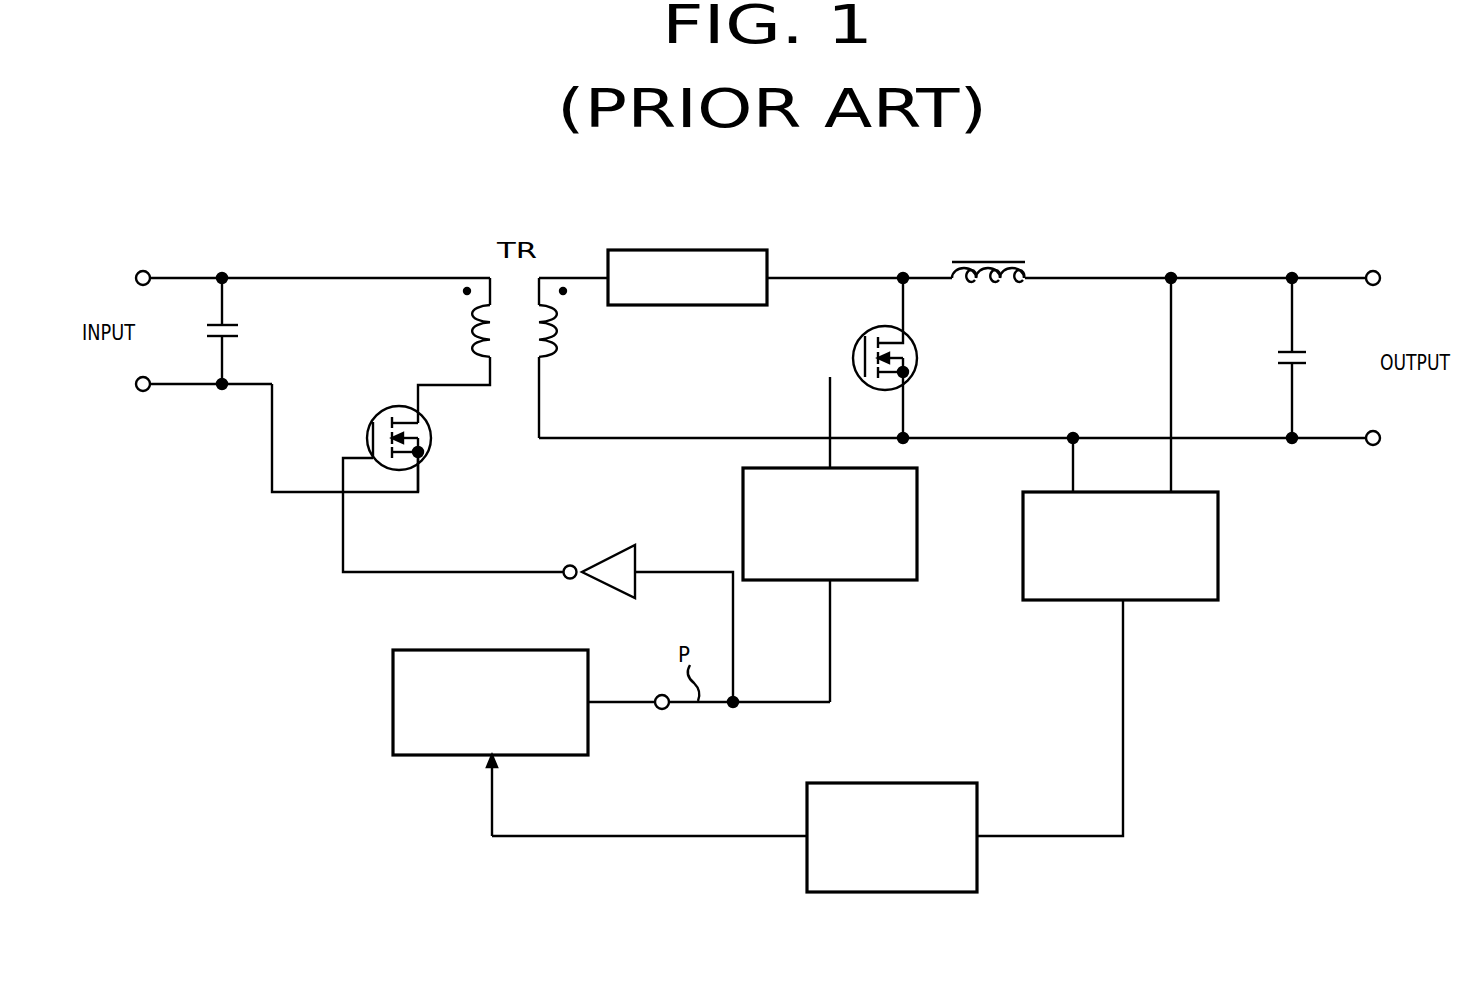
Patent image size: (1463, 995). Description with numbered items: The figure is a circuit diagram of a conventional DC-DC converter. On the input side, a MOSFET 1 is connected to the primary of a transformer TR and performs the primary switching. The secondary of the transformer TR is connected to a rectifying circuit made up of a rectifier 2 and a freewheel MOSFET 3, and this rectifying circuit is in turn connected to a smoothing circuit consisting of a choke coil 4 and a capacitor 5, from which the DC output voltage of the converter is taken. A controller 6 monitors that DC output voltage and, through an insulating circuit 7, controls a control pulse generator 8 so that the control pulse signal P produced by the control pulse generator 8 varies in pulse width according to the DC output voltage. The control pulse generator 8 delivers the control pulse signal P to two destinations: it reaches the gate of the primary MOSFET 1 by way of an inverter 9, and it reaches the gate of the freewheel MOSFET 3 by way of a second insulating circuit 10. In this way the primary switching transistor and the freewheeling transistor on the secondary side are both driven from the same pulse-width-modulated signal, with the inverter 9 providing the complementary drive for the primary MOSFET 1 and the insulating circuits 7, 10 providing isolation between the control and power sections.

The MOSFET 1 is at (431, 432).
The rectifier 2 is at (688, 250).
The freewheel MOSFET 3 is at (917, 352).
The choke coil 4 is at (992, 255).
The capacitor 5 is at (1310, 356).
The controller 6 is at (1218, 548).
The insulating circuit 7 is at (905, 783).
The control pulse generator 8 is at (393, 697).
The inverter 9 is at (605, 558).
The insulating circuit 10 is at (917, 520).